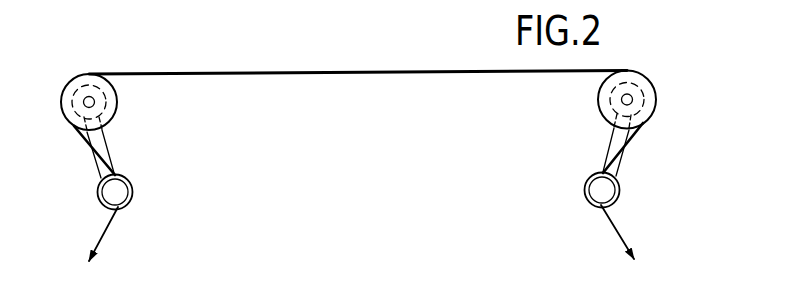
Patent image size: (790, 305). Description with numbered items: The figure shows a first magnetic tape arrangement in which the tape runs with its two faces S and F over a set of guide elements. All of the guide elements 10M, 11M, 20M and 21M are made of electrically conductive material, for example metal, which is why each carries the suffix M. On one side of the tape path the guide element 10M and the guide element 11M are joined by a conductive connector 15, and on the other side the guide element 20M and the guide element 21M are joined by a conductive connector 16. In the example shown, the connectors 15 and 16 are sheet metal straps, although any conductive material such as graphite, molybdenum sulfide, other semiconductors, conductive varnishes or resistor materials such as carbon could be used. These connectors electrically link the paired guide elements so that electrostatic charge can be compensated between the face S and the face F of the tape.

The face of the magnetic tape S is at (217, 70).
The face of the magnetic tape F is at (281, 77).
The guide element 10M is at (114, 108).
The guide element 11M is at (108, 192).
The conductive connector 15 is at (107, 146).
The conductive connector 16 is at (612, 141).
The guide element 20M is at (601, 102).
The guide element 21M is at (612, 190).